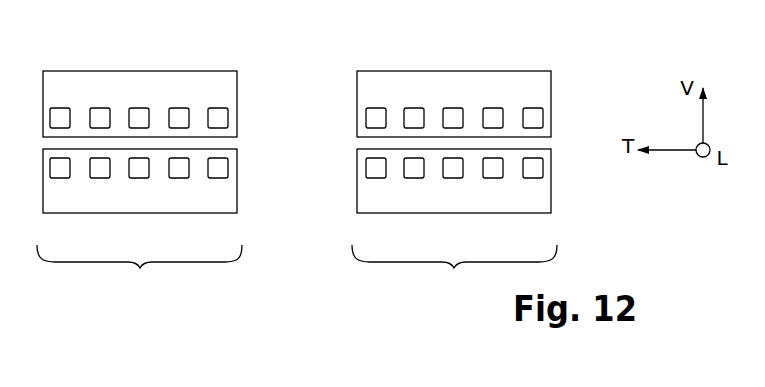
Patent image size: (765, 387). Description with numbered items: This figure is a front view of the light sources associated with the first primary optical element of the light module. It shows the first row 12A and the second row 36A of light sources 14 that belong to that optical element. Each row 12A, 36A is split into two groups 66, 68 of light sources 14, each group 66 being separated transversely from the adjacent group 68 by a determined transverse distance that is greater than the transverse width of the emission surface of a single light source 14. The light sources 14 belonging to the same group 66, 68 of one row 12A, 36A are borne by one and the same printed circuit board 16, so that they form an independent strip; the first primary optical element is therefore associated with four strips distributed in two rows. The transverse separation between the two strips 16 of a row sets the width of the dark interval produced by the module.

The light source 14 is at (178, 117).
The printed circuit board 16 is at (120, 88).
The group of light sources 66 is at (139, 271).
The group of light sources 68 is at (454, 270).
The second row of light sources 36A is at (562, 103).
The first row of light sources 12A is at (565, 185).